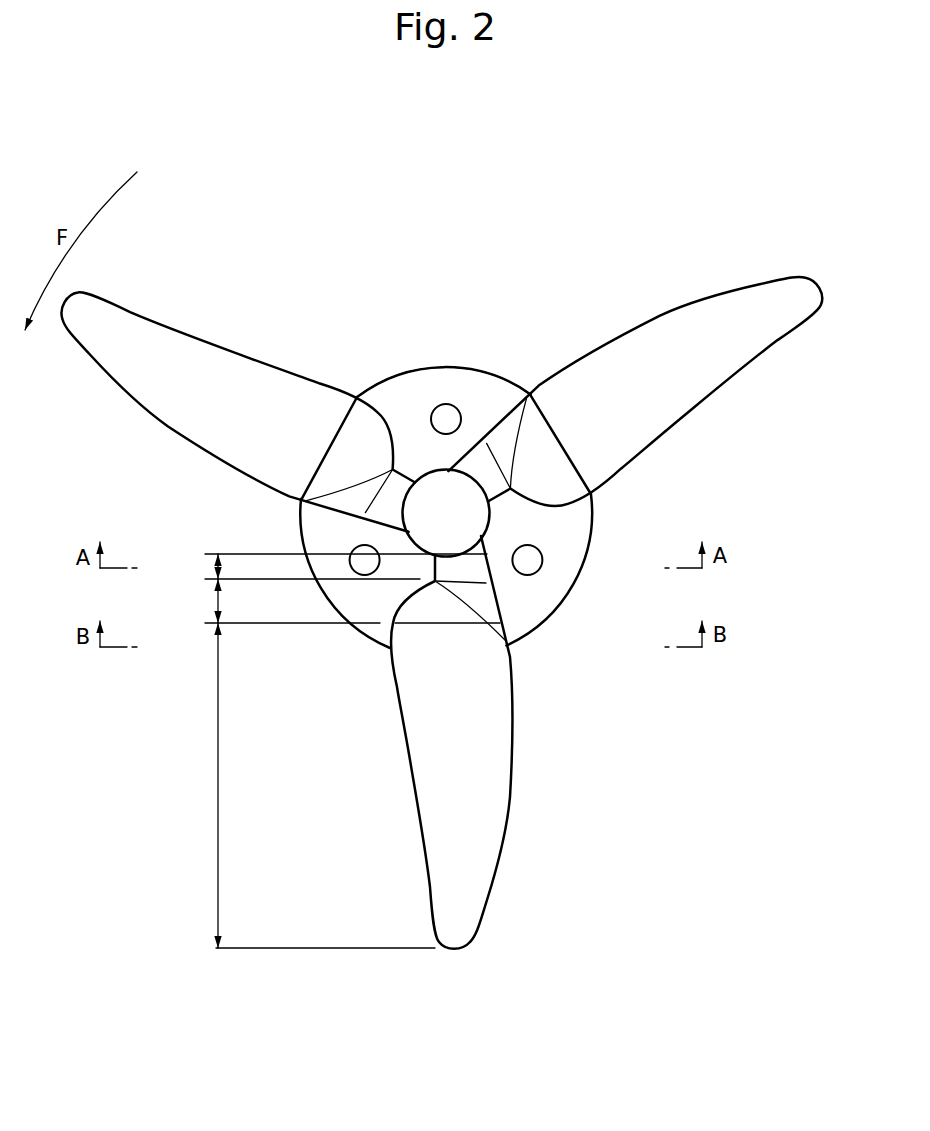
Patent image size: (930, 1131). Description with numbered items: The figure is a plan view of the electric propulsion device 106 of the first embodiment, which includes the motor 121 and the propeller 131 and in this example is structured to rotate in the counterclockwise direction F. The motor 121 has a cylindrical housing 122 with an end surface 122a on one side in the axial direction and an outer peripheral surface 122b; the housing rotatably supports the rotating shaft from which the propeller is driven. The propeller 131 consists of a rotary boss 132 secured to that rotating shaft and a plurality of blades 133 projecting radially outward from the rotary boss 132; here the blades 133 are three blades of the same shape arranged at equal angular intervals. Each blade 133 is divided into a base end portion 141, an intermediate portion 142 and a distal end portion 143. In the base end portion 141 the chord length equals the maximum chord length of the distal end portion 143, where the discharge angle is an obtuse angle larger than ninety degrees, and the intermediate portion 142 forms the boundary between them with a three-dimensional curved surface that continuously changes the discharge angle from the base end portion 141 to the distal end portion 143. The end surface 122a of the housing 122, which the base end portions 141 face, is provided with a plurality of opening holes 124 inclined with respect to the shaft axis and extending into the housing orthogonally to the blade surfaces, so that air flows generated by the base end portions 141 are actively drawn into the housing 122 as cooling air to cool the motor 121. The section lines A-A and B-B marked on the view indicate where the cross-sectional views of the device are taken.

The electric propulsion device 106 is at (316, 269).
The motor 121 is at (474, 366).
The housing 122 is at (410, 370).
The end surface 122a is at (403, 405).
The outer peripheral surface 122b is at (503, 377).
The opening holes 124 is at (515, 556).
The propeller 131 is at (766, 277).
The rotary boss 132 is at (492, 510).
The blades 133 is at (443, 578).
The base end portion 141 is at (326, 567).
The intermediate portion 142 is at (332, 602).
The distal end portion 143 is at (300, 785).